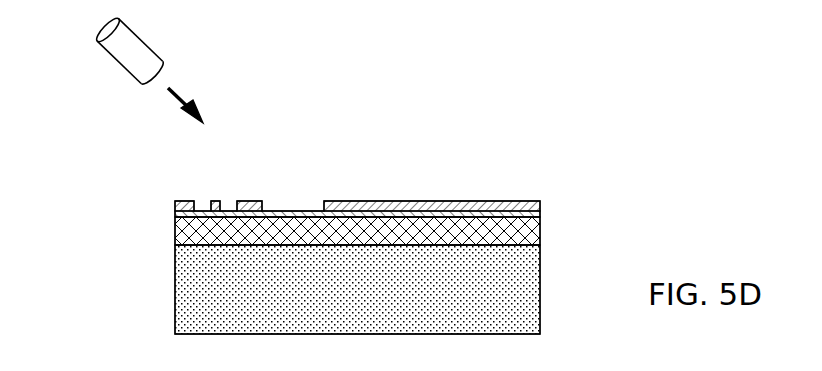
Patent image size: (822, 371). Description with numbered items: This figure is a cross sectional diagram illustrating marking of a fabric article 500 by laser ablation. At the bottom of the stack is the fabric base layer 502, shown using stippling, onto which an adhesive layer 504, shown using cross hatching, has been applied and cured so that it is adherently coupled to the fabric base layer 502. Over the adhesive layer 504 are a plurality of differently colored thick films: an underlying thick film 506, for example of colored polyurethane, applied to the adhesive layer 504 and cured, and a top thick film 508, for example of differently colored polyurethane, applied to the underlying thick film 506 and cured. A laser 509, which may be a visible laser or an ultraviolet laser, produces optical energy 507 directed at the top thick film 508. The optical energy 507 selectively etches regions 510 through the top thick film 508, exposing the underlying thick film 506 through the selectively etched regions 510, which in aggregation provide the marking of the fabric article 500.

The fabric article 500 is at (507, 180).
The fabric base layer 502 is at (541, 263).
The adhesive layer 504 is at (540, 233).
The underlying thick film 506 is at (540, 214).
The top thick film 508 is at (545, 205).
The laser 509 is at (110, 62).
The optical energy 507 is at (180, 92).
The selectively etched regions 510 is at (305, 201).